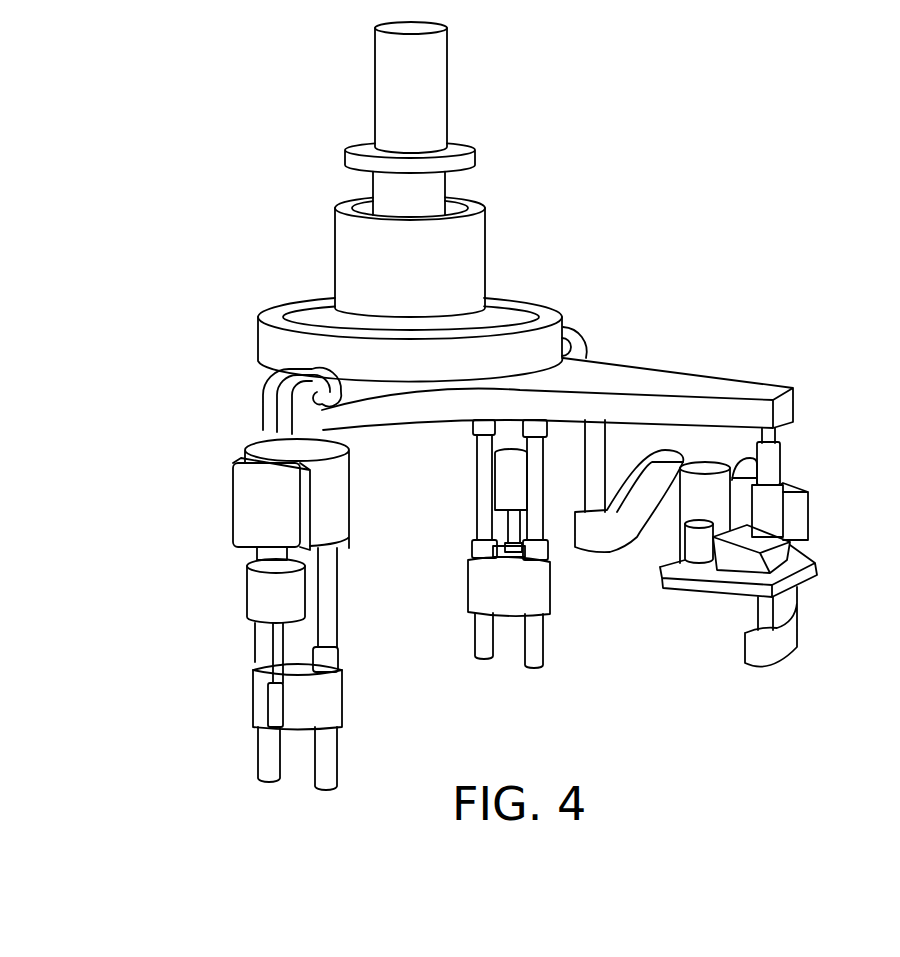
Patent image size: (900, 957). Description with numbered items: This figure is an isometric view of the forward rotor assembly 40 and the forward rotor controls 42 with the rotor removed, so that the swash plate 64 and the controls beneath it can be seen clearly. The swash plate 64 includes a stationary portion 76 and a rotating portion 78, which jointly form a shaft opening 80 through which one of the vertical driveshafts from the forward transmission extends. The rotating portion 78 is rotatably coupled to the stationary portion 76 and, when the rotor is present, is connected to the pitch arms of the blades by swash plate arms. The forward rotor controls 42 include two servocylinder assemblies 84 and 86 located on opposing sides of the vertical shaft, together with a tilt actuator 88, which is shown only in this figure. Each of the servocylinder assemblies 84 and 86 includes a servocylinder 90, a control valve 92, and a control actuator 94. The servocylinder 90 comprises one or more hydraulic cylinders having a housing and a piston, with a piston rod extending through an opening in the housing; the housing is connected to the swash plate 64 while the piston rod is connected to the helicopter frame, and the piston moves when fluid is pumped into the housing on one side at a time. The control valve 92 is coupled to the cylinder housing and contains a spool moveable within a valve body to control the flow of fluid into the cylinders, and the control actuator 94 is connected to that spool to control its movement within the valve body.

The forward rotor assembly 40 is at (252, 128).
The forward rotor controls 42 is at (217, 590).
The swash plate 64 is at (673, 378).
The stationary portion 76 is at (600, 365).
The rotating portion 78 is at (272, 316).
The shaft opening 80 is at (493, 327).
The servocylinder assembly 84 is at (210, 692).
The servocylinder assembly 86 is at (566, 614).
The tilt actuator 88 is at (783, 547).
The servocylinder 90 is at (346, 520).
The control valve 92 is at (243, 513).
The control actuator 94 is at (272, 705).